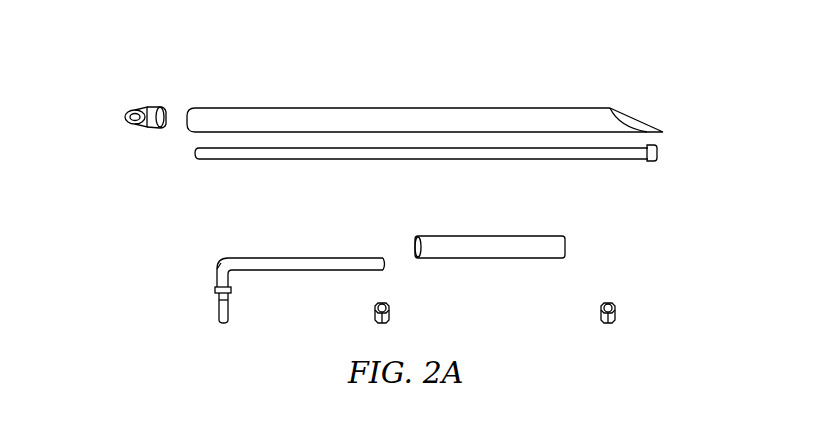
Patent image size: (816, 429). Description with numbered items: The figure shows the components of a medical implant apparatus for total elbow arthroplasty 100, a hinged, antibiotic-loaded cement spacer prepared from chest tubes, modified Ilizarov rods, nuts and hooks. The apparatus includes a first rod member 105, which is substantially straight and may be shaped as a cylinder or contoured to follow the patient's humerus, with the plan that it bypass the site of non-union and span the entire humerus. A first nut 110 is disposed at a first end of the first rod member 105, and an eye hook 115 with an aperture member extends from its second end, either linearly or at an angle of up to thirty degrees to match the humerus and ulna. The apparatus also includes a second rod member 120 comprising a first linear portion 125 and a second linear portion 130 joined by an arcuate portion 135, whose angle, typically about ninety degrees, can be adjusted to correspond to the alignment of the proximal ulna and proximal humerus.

The medical implant apparatus for total elbow arthroplasty 100 is at (748, 88).
The first rod member 105 is at (195, 153).
The first nut 110 is at (651, 163).
The eye hook 115 is at (132, 108).
The second rod member 120 is at (218, 300).
The first linear portion 125 is at (232, 300).
The second linear portion 130 is at (275, 255).
The arcuate portion 135 is at (221, 263).